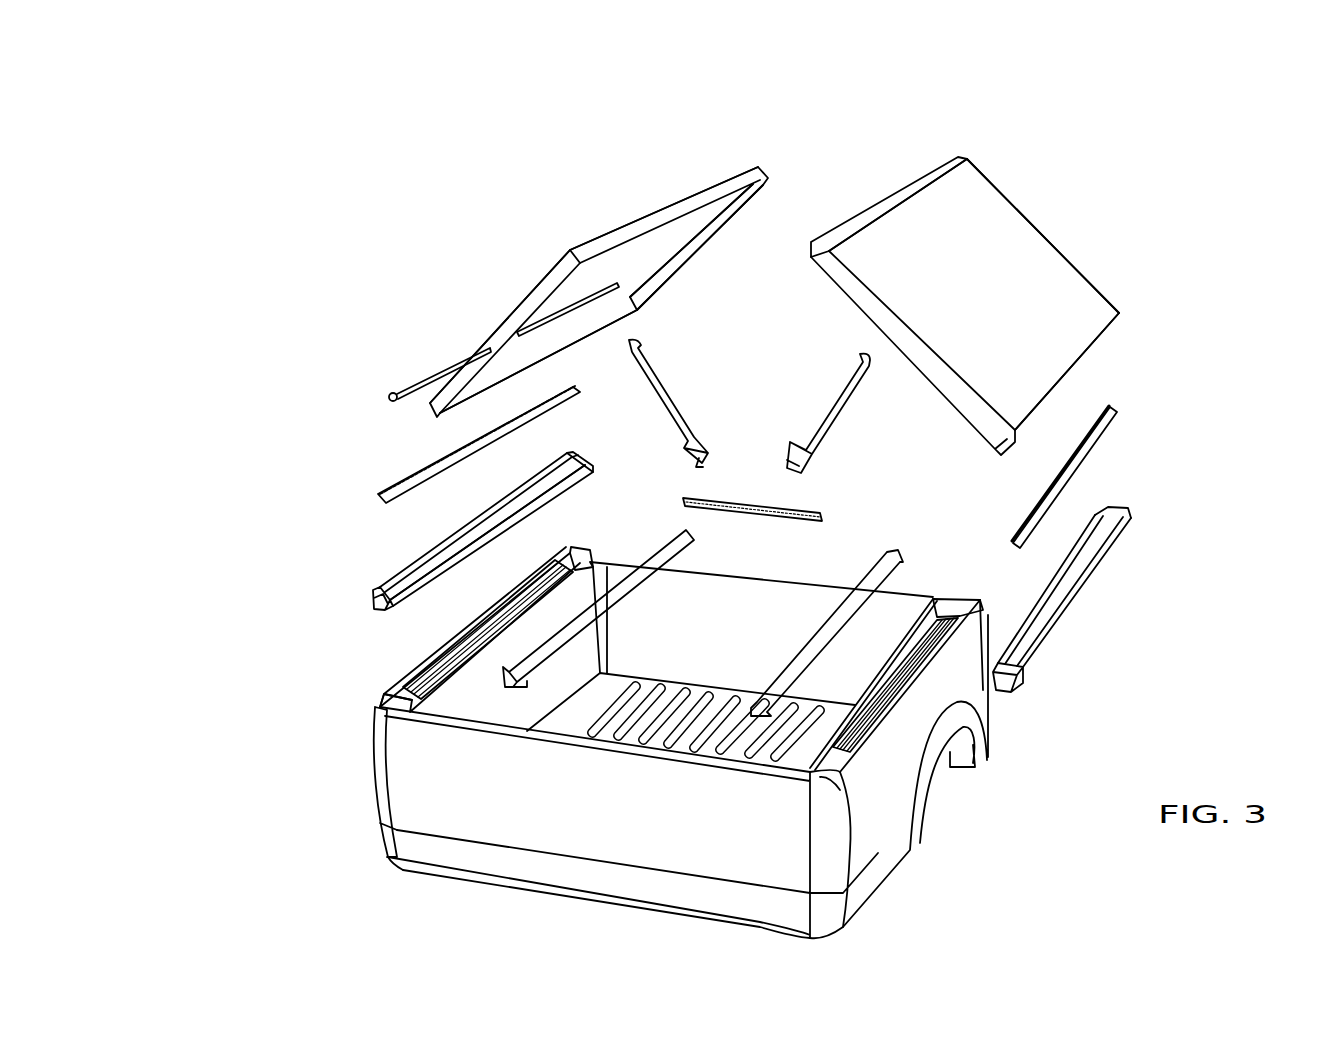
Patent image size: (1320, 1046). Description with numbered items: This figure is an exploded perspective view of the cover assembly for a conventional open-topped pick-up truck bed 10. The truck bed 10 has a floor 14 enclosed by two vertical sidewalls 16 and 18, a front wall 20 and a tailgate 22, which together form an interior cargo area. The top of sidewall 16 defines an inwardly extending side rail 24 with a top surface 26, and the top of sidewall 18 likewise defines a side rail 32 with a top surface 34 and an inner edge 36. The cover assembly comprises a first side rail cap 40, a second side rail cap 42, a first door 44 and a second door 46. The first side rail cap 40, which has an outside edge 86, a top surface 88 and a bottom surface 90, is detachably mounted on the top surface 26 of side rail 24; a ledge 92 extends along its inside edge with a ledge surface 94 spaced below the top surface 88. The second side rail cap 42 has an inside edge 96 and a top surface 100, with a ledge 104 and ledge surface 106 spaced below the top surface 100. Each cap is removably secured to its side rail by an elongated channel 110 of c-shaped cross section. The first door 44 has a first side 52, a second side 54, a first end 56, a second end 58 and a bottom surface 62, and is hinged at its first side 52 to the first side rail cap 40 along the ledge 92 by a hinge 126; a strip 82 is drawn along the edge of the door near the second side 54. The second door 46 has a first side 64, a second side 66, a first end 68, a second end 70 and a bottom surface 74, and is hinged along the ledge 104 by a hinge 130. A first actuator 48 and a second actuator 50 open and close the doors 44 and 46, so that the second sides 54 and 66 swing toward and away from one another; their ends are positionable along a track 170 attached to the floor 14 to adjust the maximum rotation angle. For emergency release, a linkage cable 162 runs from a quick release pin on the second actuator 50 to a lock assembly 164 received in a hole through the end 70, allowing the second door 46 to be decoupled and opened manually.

The truck bed 10 is at (357, 718).
The floor 14 is at (730, 692).
The sidewall 16 is at (977, 692).
The sidewall 18 is at (380, 777).
The front wall 20 is at (723, 588).
The tailgate 22 is at (460, 823).
The side rail 24 is at (950, 590).
The top surface 26 is at (955, 618).
The side rail 32 is at (560, 557).
The top surface 34 is at (400, 697).
The inner edge 36 is at (590, 552).
The first side rail cap 40 is at (1120, 550).
The second side rail cap 42 is at (357, 588).
The first door 44 is at (1093, 280).
The second door 46 is at (553, 260).
The first actuator 48 is at (825, 395).
The second actuator 50 is at (673, 385).
The first side 52 is at (1087, 353).
The second side 54 is at (963, 157).
The first end 56 is at (1053, 240).
The second end 58 is at (937, 380).
The bottom surface 62 is at (974, 294).
The first side 64 is at (430, 405).
The second side 66 is at (720, 184).
The first end 68 is at (750, 214).
The second end 70 is at (508, 313).
The bottom surface 74 is at (599, 292).
The panel hinge strip 82 is at (933, 178).
The outside edge 86 is at (1031, 664).
The top surface 88 is at (1118, 512).
The bottom surface 90 is at (1091, 580).
The ledge 92 is at (1037, 600).
The ledge surface 94 is at (1096, 512).
The inside edge 96 is at (585, 458).
The top surface 100 is at (413, 562).
The ledge 104 is at (497, 540).
The ledge surface 106 is at (400, 595).
The elongated channel 110 is at (688, 532).
The hinge 126 is at (1113, 410).
The hinge 130 is at (380, 496).
The linkage cable 162 is at (432, 372).
The lock assembly 164 is at (388, 396).
The track 170 is at (757, 499).